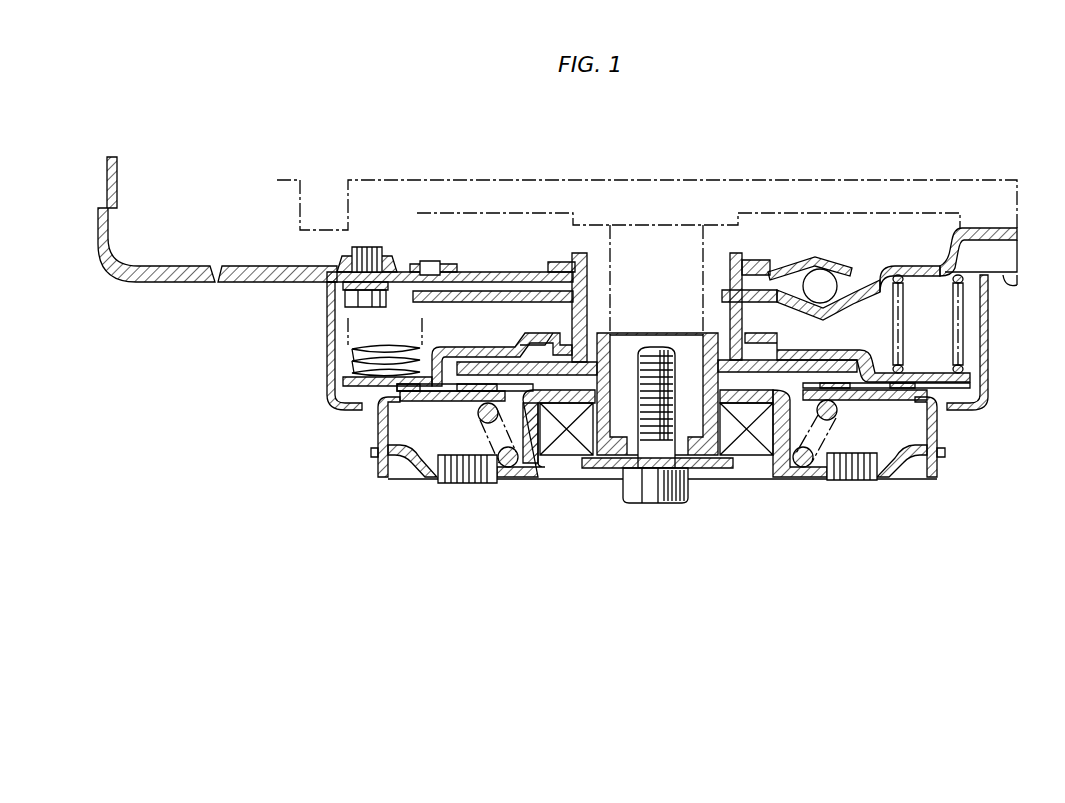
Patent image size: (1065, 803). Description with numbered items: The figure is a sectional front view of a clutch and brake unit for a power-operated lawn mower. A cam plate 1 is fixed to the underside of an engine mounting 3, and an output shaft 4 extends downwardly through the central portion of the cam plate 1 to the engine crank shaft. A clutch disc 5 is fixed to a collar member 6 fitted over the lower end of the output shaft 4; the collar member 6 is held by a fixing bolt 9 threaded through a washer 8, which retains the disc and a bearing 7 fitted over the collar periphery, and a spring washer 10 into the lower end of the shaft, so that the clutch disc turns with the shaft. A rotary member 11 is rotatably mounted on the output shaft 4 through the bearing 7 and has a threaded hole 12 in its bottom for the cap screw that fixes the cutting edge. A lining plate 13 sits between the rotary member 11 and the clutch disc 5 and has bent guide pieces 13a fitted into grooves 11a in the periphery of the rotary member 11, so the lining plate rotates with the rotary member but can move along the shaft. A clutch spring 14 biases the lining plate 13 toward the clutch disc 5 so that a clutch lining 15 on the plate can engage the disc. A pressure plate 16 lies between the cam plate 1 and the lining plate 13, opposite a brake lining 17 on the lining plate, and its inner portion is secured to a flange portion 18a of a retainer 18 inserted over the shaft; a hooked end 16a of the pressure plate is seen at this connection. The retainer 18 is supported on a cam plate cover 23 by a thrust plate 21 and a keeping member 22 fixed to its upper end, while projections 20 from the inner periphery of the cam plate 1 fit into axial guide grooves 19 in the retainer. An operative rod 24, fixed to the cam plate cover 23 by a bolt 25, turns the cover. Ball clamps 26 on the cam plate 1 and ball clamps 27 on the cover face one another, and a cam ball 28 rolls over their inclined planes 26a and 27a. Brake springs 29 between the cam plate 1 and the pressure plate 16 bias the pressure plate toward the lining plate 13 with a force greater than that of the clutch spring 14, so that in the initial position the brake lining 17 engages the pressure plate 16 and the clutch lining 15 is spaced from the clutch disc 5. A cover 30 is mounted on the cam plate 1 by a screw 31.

The cam plate 1 is at (905, 266).
The engine mounting 3 is at (758, 182).
The output shaft 4 is at (678, 228).
The clutch disc 5 is at (855, 386).
The collar member 6 is at (600, 396).
The bearing 7 is at (722, 422).
The washer 8 is at (590, 468).
The fixing bolt 9 is at (633, 504).
The spring washer 10 is at (628, 490).
The rotary member 11 is at (508, 472).
The grooves 11a is at (371, 453).
The threaded hole 12 is at (852, 476).
The lining plate 13 is at (912, 396).
The guide pieces 13a is at (382, 470).
The clutch spring 14 is at (833, 418).
The clutch lining 15 is at (463, 396).
The pressure plate 16 is at (468, 347).
The plate hook 16a is at (560, 338).
The brake lining 17 is at (413, 388).
The retainer 18 is at (588, 282).
The flange portion 18a is at (523, 348).
The guide grooves 19 is at (742, 268).
The projections 20 is at (722, 296).
The thrust plate 21 is at (548, 270).
The keeping member 22 is at (560, 262).
The cam plate cover 23 is at (478, 270).
The operative rod 24 is at (173, 265).
The bolt 25 is at (345, 298).
The ball clamps 26 is at (790, 303).
The inclined planes 26a is at (855, 302).
The ball clamps 27 is at (818, 258).
The inclined planes 27a is at (778, 266).
The cam ball 28 is at (823, 284).
The brake springs 29 is at (376, 350).
The cover 30 is at (988, 355).
The screw 31 is at (1010, 284).